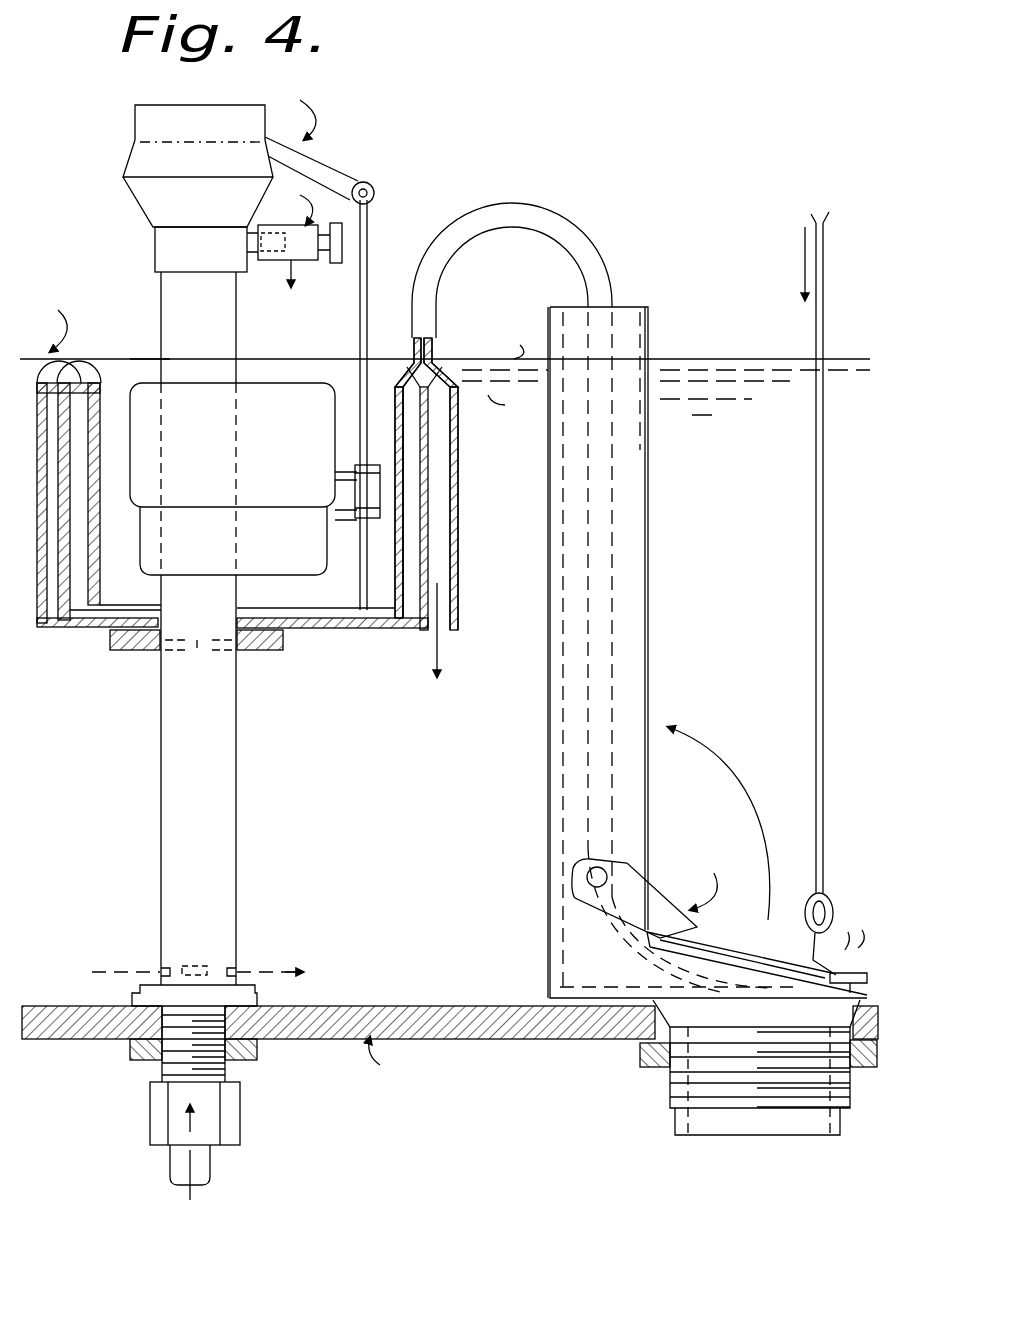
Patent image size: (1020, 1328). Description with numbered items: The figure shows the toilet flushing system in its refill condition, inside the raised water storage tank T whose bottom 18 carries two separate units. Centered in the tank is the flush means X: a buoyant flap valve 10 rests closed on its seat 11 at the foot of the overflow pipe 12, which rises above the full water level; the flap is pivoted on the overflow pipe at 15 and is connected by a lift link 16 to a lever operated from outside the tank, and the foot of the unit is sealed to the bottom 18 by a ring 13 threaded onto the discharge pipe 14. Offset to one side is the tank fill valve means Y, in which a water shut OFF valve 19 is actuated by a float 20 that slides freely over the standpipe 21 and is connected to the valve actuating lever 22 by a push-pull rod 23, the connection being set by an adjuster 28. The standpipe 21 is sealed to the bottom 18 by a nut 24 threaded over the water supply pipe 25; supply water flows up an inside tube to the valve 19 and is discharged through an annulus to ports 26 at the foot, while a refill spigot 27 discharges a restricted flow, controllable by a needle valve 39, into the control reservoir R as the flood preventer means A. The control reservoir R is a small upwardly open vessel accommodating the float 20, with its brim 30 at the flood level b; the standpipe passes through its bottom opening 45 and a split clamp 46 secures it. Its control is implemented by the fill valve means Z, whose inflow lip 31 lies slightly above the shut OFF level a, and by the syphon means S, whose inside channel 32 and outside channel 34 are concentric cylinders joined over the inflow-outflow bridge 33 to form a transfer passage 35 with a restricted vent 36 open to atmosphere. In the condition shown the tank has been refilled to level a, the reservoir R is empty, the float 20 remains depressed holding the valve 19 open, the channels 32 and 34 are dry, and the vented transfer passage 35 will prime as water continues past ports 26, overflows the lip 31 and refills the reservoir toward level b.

The flap valve 10 is at (761, 940).
The seat 11 is at (851, 959).
The overflow pipe 12 is at (640, 650).
The ring 13 is at (642, 1060).
The discharge pipe 14 is at (670, 1108).
The pivot 15 is at (573, 875).
The lift link 16 is at (814, 598).
The bottom 18 is at (425, 985).
The water shut OFF valve 19 is at (198, 188).
The float 20 is at (232, 479).
The standpipe 21 is at (222, 330).
The valve actuating lever 22 is at (340, 165).
The push-pull rod 23 is at (370, 265).
The nut 24 is at (132, 1062).
The water supply pipe 25 is at (200, 1162).
The ports 26 is at (235, 970).
The refill spigot 27 is at (268, 261).
The adjuster 28 is at (356, 512).
The brim 30 is at (135, 357).
The inflow lip 31 is at (117, 403).
The inside channel 32 is at (412, 466).
The inflow-outflow bridge 33 is at (435, 378).
The outside channel 34 is at (440, 505).
The transfer passage 35 is at (402, 372).
The vent 36 is at (558, 220).
The needle valve 39 is at (334, 264).
The bottom opening 45 is at (140, 628).
The split clamp 46 is at (255, 650).
The flood preventer means A is at (294, 202).
The control reservoir R is at (332, 605).
The syphon means S is at (50, 622).
The storage tank T is at (389, 1063).
The flush means X is at (695, 881).
The tank fill valve means Y is at (304, 106).
The fill valve means Z is at (52, 322).
The control water level a is at (505, 411).
The flood level b is at (512, 339).